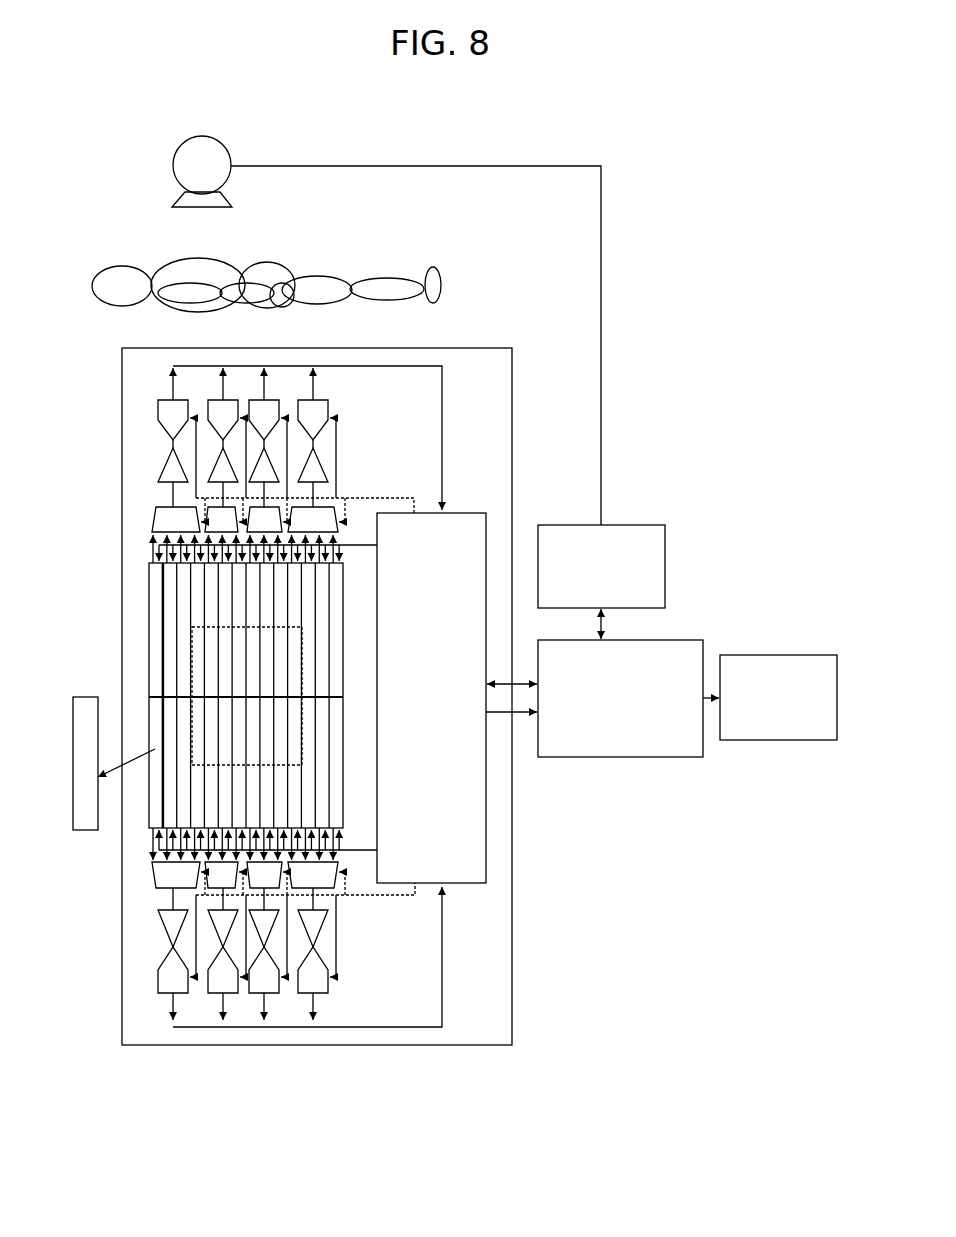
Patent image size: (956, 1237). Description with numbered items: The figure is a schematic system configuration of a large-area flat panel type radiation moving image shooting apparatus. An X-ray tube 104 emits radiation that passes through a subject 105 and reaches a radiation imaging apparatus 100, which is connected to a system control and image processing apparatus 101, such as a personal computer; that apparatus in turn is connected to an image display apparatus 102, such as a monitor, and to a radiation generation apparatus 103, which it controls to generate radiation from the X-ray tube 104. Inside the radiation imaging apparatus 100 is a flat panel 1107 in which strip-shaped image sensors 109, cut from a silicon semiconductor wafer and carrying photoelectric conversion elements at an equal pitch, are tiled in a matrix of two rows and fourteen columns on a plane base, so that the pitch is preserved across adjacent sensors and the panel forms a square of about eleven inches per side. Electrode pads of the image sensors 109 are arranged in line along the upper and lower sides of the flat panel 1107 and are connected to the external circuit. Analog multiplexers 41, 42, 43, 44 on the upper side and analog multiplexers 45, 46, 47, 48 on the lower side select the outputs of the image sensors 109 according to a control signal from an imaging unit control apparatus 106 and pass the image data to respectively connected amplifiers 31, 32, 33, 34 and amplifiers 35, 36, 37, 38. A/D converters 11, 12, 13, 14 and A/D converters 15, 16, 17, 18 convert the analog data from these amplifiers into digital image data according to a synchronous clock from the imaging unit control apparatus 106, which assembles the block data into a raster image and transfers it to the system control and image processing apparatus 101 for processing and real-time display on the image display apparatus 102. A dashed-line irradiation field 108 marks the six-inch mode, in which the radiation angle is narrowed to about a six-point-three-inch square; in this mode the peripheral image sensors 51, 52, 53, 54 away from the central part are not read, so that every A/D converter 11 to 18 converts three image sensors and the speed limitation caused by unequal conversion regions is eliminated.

The radiation imaging apparatus 100 is at (490, 348).
The system control and image processing apparatus 101 is at (624, 760).
The image display apparatus 102 is at (769, 655).
The radiation generation apparatus 103 is at (637, 525).
The X-ray tube 104 is at (200, 136).
The subject 105 is at (236, 262).
The imaging unit control apparatus 106 is at (466, 513).
The irradiation field 108 is at (192, 690).
The image sensor 109 is at (88, 833).
The flat panel 1107 is at (147, 648).
The A/D converter 11 is at (181, 409).
The A/D converter 12 is at (229, 409).
The A/D converter 13 is at (277, 409).
The A/D converter 14 is at (323, 412).
The A/D converter 15 is at (179, 987).
The A/D converter 16 is at (226, 987).
The A/D converter 17 is at (270, 987).
The A/D converter 18 is at (316, 987).
The amplifier 31 is at (166, 466).
The amplifier 32 is at (219, 457).
The amplifier 33 is at (269, 457).
The amplifier 34 is at (320, 461).
The amplifier 35 is at (165, 926).
The amplifier 36 is at (217, 933).
The amplifier 37 is at (270, 932).
The amplifier 38 is at (321, 928).
The analog multiplexer 41 is at (153, 520).
The analog multiplexer 42 is at (212, 507).
The analog multiplexer 43 is at (277, 507).
The analog multiplexer 44 is at (334, 515).
The analog multiplexer 45 is at (153, 885).
The analog multiplexer 46 is at (208, 888).
The analog multiplexer 47 is at (281, 887).
The analog multiplexer 48 is at (335, 882).
The image sensor 51 is at (153, 598).
The image sensor 52 is at (338, 635).
The image sensor 53 is at (155, 738).
The image sensor 54 is at (340, 770).